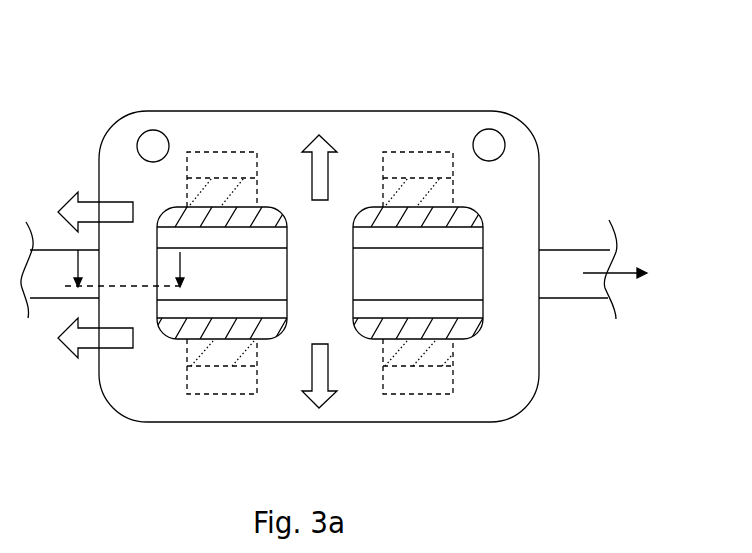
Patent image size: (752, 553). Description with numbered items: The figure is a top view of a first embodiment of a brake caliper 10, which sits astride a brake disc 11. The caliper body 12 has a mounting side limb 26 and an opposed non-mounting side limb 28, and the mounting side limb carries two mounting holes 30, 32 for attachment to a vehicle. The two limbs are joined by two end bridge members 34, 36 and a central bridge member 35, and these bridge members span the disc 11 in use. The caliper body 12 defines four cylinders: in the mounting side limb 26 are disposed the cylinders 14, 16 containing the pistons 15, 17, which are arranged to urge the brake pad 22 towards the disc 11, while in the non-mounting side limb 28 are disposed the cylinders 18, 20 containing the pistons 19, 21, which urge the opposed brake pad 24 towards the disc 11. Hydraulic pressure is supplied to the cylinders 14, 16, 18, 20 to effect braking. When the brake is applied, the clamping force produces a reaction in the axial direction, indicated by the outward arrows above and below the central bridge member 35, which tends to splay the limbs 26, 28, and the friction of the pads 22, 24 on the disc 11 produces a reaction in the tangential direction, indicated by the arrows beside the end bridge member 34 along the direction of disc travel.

The brake caliper 10 is at (357, 233).
The brake disc 11 is at (353, 221).
The caliper body 12 is at (273, 137).
The cylinder 14 is at (215, 160).
The piston 15 is at (227, 187).
The cylinder 16 is at (431, 162).
The piston 17 is at (439, 190).
The cylinder 18 is at (205, 383).
The piston 19 is at (212, 351).
The cylinder 20 is at (409, 383).
The piston 21 is at (429, 354).
The brake pad 22 is at (183, 220).
The brake pad 24 is at (464, 330).
The mounting side limb 26 is at (349, 144).
The non-mounting side limb 28 is at (349, 413).
The mounting hole 30 is at (153, 143).
The mounting hole 32 is at (490, 143).
The end bridge member 34 is at (129, 269).
The central bridge member 35 is at (310, 277).
The end bridge member 36 is at (500, 277).